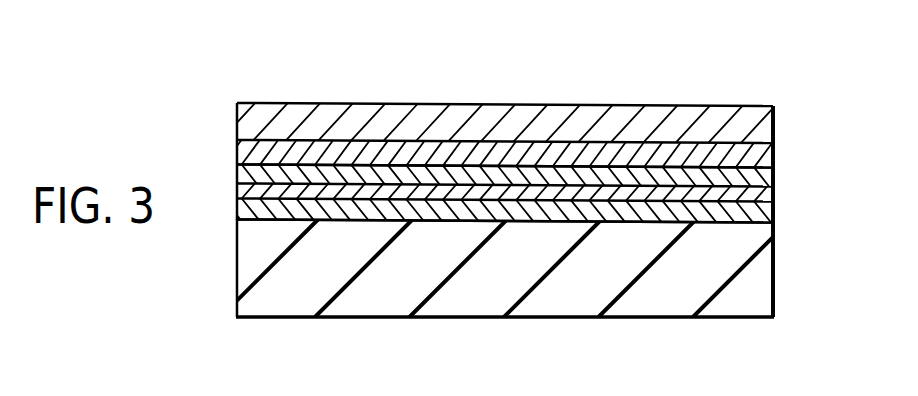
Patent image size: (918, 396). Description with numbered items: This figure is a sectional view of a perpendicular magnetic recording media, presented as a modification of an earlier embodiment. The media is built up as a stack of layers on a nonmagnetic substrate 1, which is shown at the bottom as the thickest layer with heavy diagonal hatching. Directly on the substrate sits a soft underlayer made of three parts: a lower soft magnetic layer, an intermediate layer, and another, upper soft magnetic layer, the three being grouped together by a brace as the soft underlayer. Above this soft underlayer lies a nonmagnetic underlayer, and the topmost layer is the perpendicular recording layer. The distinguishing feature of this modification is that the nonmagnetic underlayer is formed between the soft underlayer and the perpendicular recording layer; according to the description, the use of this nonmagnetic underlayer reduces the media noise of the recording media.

The nonmagnetic substrate 1 is at (768, 291).